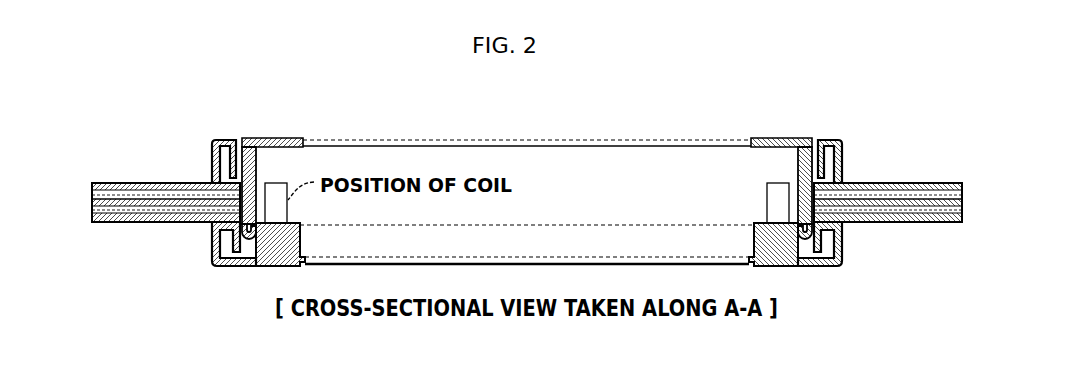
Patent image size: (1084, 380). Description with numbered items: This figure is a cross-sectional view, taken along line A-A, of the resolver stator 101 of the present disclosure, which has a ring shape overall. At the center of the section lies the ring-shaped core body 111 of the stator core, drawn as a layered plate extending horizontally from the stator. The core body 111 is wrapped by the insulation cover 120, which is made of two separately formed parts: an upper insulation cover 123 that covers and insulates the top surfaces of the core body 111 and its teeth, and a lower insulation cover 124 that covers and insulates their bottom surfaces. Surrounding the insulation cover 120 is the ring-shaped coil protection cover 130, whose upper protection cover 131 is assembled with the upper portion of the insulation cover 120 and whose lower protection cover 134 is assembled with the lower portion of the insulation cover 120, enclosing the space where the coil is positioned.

The stator 101 is at (903, 118).
The core body 111 is at (873, 216).
The insulation cover 120 is at (527, 170).
The upper insulation cover 123 is at (243, 165).
The lower insulation cover 124 is at (250, 250).
The coil protection cover 130 is at (174, 208).
The upper protection cover 131 is at (215, 163).
The lower protection cover 134 is at (215, 237).